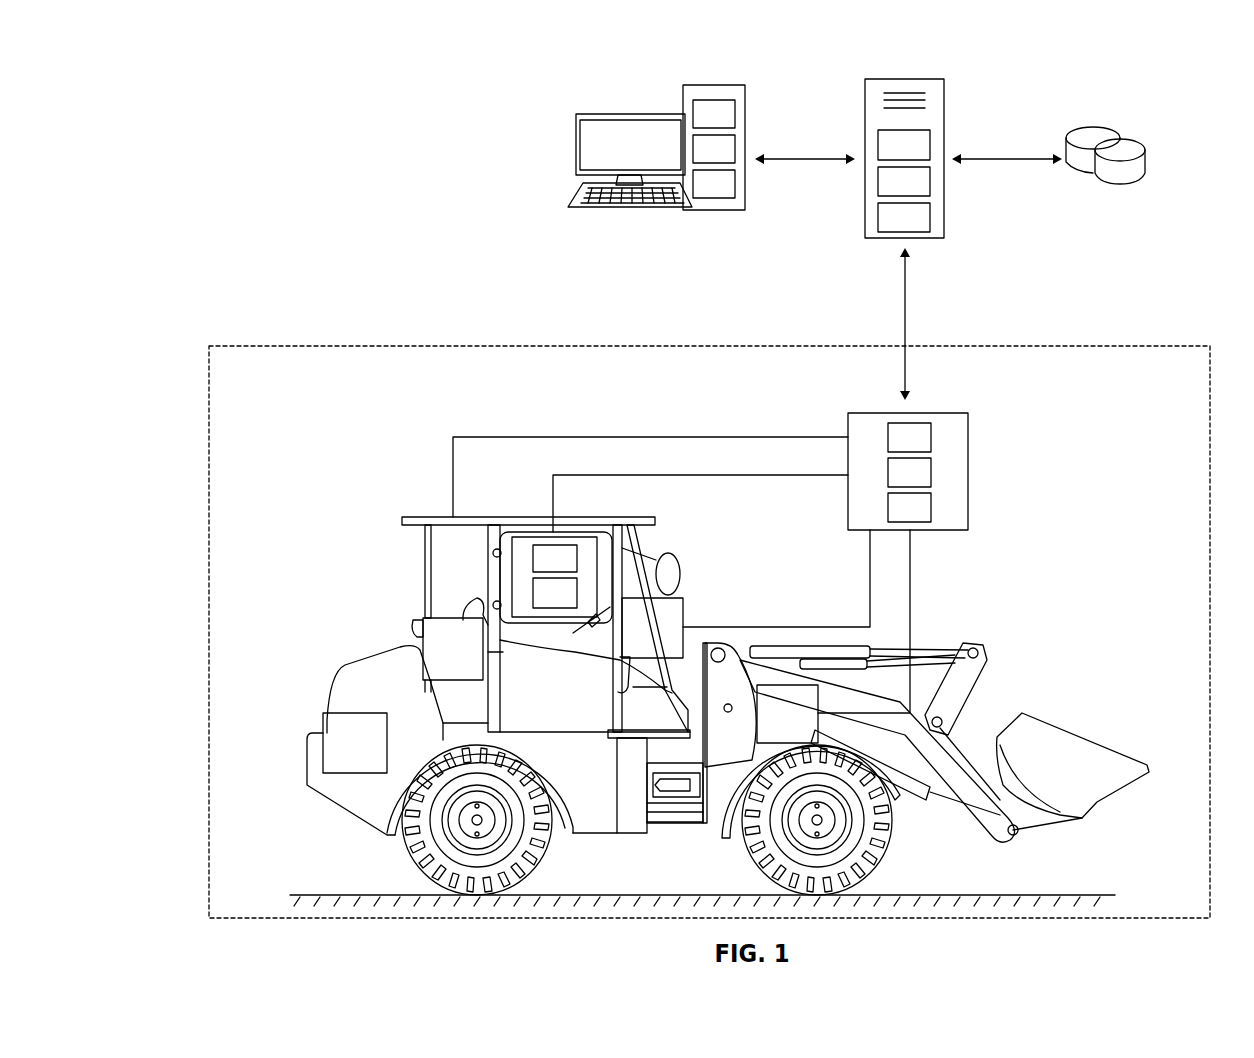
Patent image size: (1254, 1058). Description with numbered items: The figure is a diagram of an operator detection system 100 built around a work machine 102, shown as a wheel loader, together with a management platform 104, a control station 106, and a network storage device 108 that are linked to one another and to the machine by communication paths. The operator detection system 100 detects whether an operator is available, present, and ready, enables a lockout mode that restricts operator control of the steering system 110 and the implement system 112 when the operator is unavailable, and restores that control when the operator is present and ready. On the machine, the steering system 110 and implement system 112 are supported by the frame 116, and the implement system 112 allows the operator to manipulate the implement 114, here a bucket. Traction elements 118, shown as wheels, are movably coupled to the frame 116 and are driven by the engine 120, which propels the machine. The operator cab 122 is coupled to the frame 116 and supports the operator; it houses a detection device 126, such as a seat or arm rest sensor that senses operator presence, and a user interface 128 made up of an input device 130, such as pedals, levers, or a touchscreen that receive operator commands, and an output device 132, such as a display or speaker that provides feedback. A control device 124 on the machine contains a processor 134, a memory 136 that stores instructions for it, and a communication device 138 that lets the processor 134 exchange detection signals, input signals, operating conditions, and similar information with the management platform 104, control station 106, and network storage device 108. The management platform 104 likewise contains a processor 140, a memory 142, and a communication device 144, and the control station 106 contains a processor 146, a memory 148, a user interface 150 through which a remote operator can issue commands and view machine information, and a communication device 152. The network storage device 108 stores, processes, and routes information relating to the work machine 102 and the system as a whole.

The operator detection system 100 is at (215, 88).
The work machine 102 is at (209, 440).
The management platform 104 is at (923, 140).
The control station 106 is at (731, 130).
The network storage device 108 is at (1100, 124).
The steering system 110 is at (670, 639).
The implement system 112 is at (805, 724).
The implement 114 is at (1075, 740).
The frame 116 is at (592, 840).
The traction elements 118 is at (410, 847).
The engine 120 is at (372, 754).
The operator cab 122 is at (425, 582).
The control device 124 is at (729, 546).
The detection device 126 is at (470, 660).
The user interface 128 is at (581, 557).
The input device 130 is at (572, 570).
The output device 132 is at (572, 604).
The processor 134 is at (927, 449).
The memory 136 is at (927, 484).
The communication device 138 is at (927, 519).
The processor 140 is at (921, 156).
The memory 142 is at (921, 193).
The communication device 144 is at (921, 229).
The processor 146 is at (731, 125).
The memory 148 is at (731, 160).
The user interface 150 is at (563, 122).
The communication device 152 is at (731, 195).